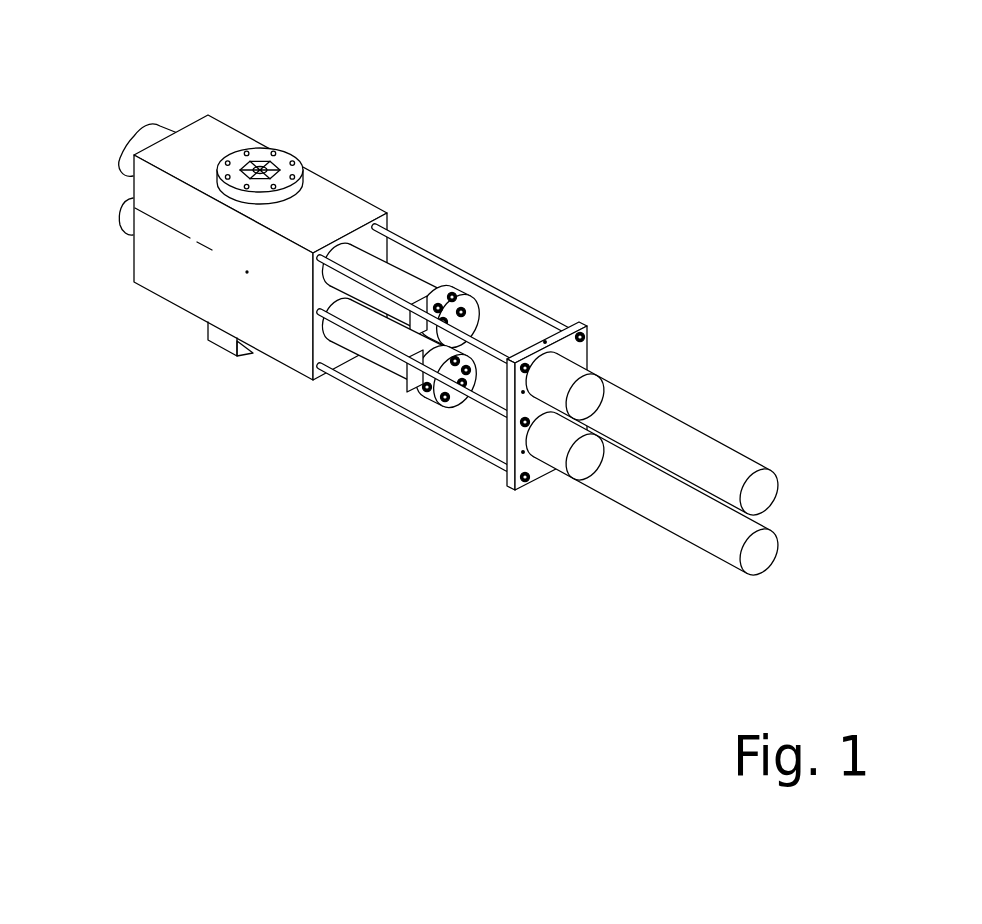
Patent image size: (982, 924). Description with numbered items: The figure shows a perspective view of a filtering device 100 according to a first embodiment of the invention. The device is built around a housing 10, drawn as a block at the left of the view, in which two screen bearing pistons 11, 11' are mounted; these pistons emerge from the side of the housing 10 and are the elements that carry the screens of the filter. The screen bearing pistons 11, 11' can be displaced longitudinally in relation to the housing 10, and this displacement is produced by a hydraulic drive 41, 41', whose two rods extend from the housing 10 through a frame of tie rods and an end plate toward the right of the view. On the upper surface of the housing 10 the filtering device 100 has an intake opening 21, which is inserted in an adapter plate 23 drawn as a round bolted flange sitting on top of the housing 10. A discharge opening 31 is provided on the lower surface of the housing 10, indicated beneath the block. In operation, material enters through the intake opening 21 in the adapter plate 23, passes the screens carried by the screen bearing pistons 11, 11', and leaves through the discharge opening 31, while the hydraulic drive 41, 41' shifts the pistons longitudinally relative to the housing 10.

The filtering device 100 is at (445, 296).
The housing 10 is at (188, 145).
The screen bearing piston 11 is at (118, 137).
The screen bearing piston 11' is at (90, 209).
The intake opening 21 is at (263, 148).
The adapter plate 23 is at (292, 172).
The discharge opening 31 is at (225, 360).
The hydraulic drive 41 is at (674, 433).
The hydraulic drive 41' is at (677, 493).